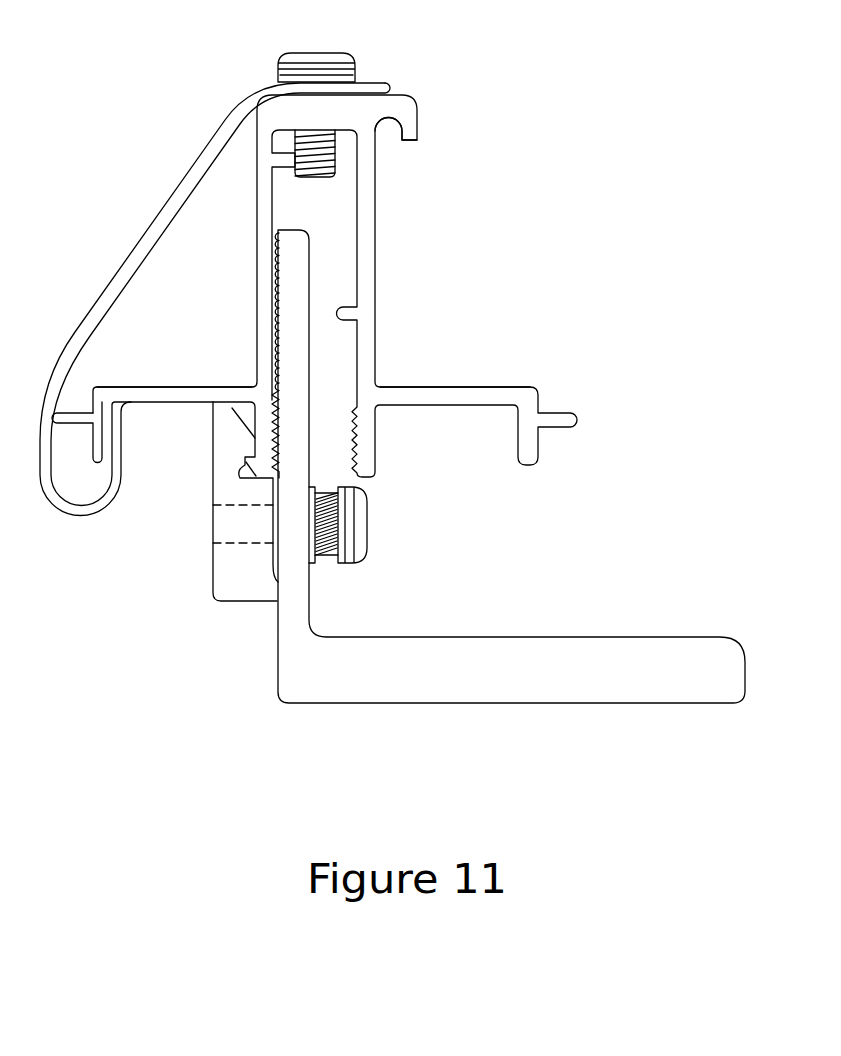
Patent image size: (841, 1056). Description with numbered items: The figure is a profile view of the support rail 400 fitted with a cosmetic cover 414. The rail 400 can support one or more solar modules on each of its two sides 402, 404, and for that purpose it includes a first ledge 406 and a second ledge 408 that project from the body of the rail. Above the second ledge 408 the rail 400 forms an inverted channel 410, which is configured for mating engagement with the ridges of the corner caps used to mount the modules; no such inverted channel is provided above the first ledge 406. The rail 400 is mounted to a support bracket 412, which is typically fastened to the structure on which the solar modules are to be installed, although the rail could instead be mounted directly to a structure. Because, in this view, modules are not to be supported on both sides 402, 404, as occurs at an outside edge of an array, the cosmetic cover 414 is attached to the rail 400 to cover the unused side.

The support rail 400 is at (237, 85).
The first side of the rail 402 is at (225, 262).
The second side of the rail 404 is at (452, 267).
The first ledge 406 is at (175, 387).
The second ledge 408 is at (457, 387).
The inverted channel 410 is at (387, 147).
The support bracket 412 is at (605, 637).
The cosmetic cover 414 is at (167, 203).